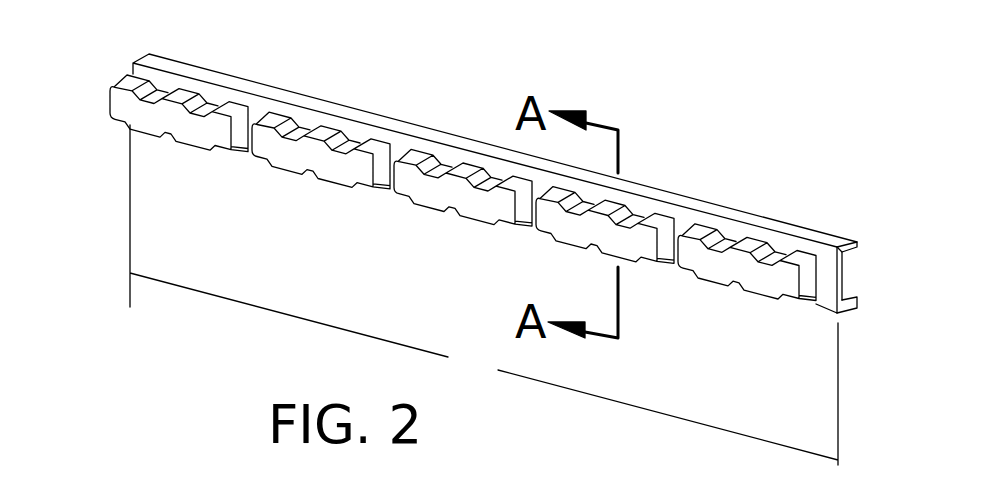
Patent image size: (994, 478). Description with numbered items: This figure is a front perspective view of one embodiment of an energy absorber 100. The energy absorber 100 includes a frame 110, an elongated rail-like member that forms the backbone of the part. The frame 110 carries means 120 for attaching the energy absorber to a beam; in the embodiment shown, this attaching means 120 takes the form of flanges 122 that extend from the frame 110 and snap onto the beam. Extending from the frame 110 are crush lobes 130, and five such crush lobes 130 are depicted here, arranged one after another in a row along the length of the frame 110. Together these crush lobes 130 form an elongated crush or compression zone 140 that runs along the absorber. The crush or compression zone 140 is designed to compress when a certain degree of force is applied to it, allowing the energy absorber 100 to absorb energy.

The energy absorber 100 is at (752, 134).
The frame 110 is at (137, 67).
The means for attaching 120 is at (847, 313).
The flanges 122 is at (858, 243).
The crush lobe 130 is at (165, 143).
The crush or compression zone 140 is at (484, 295).